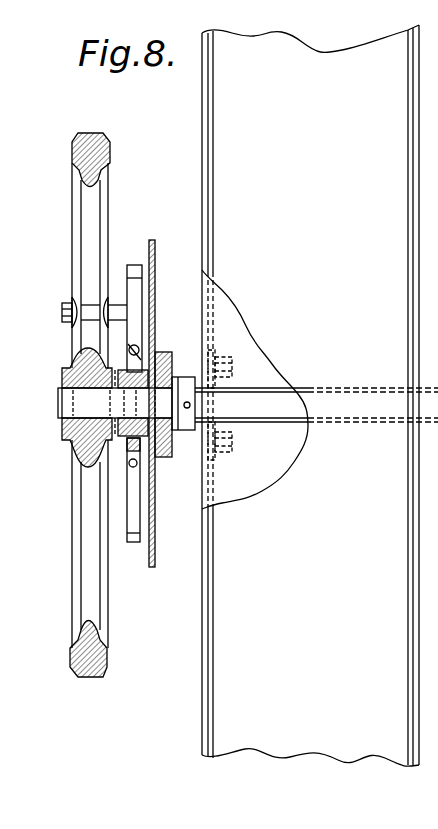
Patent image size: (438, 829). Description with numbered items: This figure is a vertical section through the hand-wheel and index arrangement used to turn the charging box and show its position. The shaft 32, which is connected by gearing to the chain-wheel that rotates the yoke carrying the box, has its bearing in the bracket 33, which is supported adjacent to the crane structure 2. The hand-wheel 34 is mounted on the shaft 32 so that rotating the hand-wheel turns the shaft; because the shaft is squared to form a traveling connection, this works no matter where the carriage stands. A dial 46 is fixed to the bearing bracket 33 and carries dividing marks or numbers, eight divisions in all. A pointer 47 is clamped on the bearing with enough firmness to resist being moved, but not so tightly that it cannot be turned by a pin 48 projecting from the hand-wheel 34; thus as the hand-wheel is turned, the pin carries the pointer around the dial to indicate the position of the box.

The beam 2 is at (310, 395).
The shaft 32 is at (248, 405).
The bracket 33 is at (164, 352).
The hand-wheel 34 is at (80, 234).
The dial 46 is at (155, 280).
The pointer 47 is at (133, 268).
The pin 48 is at (94, 312).